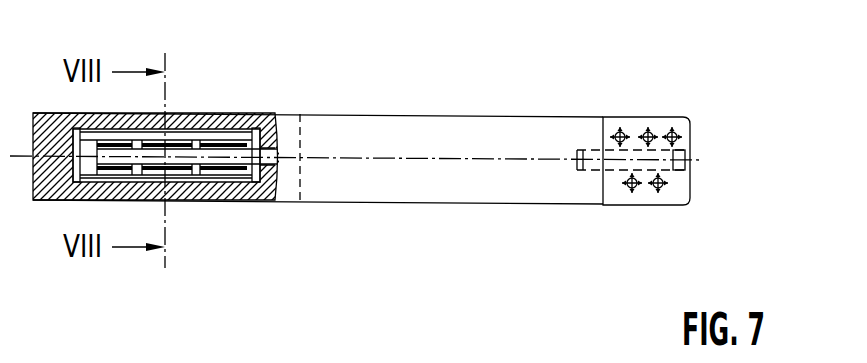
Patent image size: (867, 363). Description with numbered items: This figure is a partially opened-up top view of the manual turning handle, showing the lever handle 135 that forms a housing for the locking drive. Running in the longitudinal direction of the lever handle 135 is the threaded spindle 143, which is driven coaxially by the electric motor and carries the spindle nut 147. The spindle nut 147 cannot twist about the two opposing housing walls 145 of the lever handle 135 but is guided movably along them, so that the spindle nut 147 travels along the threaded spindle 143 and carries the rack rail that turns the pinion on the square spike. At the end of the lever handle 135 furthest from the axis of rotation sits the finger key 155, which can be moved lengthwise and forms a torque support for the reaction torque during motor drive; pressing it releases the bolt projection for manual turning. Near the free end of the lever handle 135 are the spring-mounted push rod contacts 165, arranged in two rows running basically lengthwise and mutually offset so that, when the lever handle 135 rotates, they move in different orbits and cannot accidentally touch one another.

The lever handle 135 is at (377, 113).
The threaded spindle 143 is at (257, 185).
The housing walls 145 is at (214, 134).
The spindle nut 147 is at (178, 187).
The finger key 155 is at (587, 172).
The push rod contacts 165 is at (626, 128).